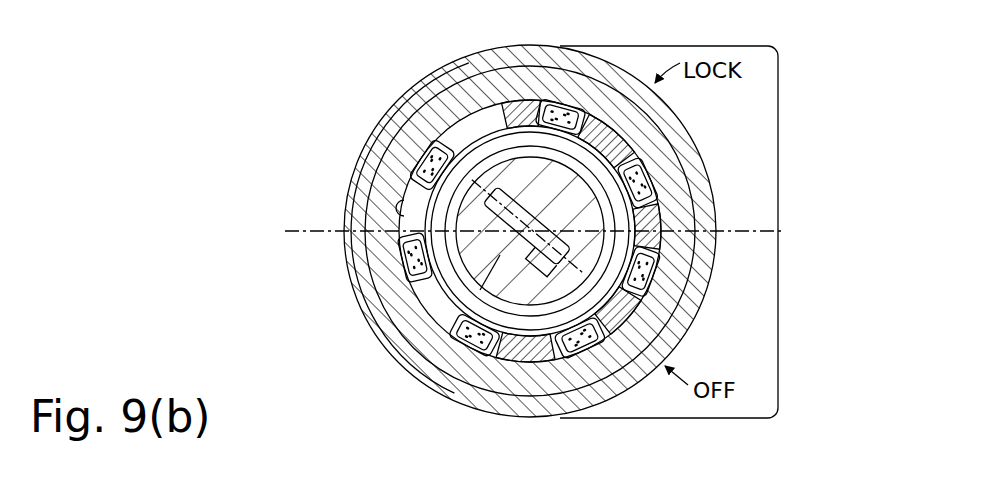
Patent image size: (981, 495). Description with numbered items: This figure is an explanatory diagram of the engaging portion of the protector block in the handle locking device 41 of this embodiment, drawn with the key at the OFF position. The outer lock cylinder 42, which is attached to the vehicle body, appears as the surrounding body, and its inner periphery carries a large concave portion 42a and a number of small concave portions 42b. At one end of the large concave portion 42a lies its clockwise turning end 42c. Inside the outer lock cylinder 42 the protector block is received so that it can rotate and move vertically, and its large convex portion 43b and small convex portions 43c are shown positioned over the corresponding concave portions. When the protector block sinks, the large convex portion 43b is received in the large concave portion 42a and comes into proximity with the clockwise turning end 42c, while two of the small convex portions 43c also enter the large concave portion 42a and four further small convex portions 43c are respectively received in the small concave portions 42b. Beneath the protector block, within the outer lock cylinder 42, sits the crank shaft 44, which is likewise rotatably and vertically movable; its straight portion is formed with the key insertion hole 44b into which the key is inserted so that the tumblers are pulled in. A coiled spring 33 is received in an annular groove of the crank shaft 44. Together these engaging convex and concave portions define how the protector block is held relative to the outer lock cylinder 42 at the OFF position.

The handle locking device 41 is at (290, 105).
The outer lock cylinder 42 is at (385, 208).
The large concave portion 42a is at (358, 181).
The small concave portions 42b is at (563, 115).
The clockwise turning end 42c is at (437, 93).
The coiled spring 33 is at (482, 54).
The large convex portion 43b is at (423, 123).
The small convex portions 43c is at (557, 100).
The crank shaft 44 is at (440, 294).
The key insertion hole 44b is at (480, 290).